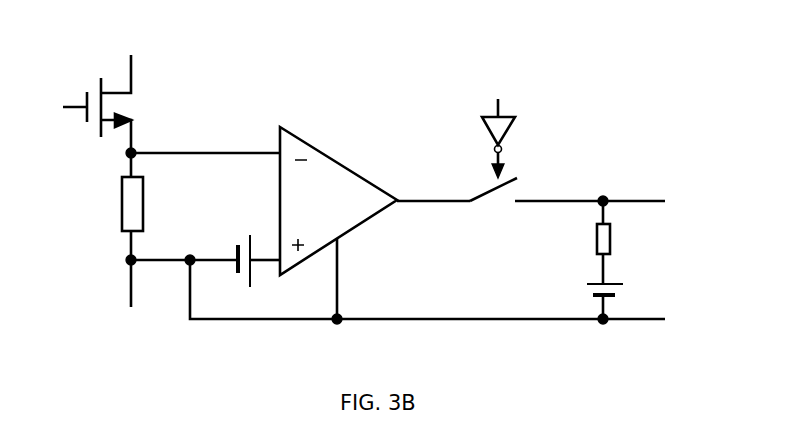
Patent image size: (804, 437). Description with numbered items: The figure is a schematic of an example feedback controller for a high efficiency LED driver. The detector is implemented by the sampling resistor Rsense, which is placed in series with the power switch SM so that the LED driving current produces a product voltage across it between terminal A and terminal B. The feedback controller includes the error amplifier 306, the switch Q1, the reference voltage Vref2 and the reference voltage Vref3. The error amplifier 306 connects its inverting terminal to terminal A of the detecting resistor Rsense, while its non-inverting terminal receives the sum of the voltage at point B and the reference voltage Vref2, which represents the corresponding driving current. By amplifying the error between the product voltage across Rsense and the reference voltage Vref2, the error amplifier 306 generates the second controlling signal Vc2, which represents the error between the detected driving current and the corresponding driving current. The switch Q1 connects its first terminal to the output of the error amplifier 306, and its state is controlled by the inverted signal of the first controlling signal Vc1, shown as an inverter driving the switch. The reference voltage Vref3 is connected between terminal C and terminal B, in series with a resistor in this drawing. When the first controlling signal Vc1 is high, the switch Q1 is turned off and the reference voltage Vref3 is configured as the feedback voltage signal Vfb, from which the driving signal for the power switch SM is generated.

The error amplifier 306 is at (338, 201).
The switch Q1 is at (478, 196).
The power switch SM is at (78, 106).
The sampling resistor Rsense is at (122, 190).
The reference voltage Vref2 is at (250, 237).
The reference voltage Vref3 is at (592, 286).
The first controlling signal Vc1 is at (498, 99).
The second controlling signal Vc2 is at (445, 201).
The feedback voltage signal Vfb is at (641, 242).
The terminal A is at (193, 159).
The terminal B is at (398, 290).
The terminal C is at (644, 202).